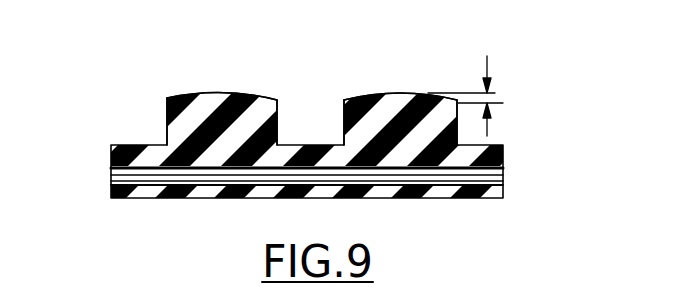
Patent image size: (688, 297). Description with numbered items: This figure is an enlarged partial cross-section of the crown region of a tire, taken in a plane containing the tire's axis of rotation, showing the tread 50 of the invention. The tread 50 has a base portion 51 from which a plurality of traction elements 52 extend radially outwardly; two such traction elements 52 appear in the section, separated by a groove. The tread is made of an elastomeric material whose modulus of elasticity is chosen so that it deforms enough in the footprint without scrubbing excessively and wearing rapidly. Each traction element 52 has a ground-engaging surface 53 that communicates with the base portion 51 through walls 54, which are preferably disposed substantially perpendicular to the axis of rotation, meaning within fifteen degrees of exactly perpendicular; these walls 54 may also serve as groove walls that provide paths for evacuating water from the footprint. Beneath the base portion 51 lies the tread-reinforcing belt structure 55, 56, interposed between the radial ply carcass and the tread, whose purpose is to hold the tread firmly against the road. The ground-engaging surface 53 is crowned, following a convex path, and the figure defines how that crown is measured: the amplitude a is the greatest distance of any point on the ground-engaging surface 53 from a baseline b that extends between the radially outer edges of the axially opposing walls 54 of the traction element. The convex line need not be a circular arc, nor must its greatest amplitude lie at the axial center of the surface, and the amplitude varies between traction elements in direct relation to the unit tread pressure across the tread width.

The tread 50 is at (126, 135).
The base portion 51 is at (503, 158).
The traction element 52 is at (240, 102).
The ground-engaging surface 53 is at (215, 92).
The walls 54 is at (167, 118).
The belt structure 55 is at (111, 167).
The belt structure 56 is at (111, 171).
The amplitude a is at (487, 64).
The baseline b is at (503, 103).